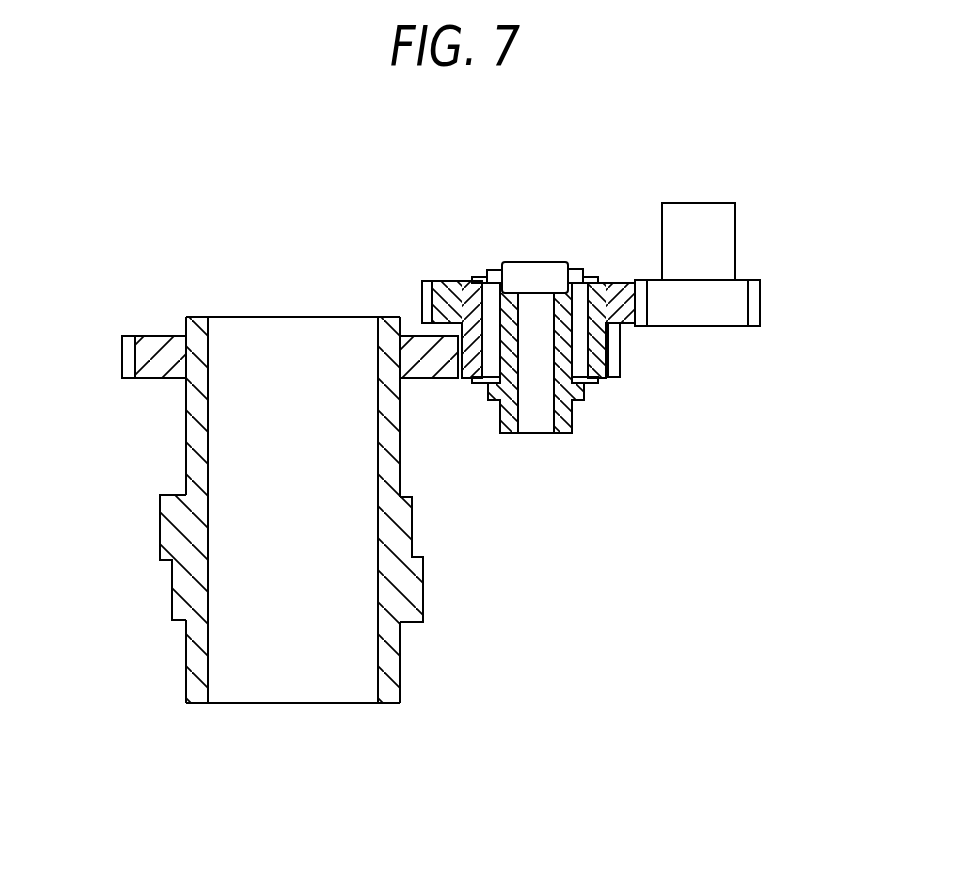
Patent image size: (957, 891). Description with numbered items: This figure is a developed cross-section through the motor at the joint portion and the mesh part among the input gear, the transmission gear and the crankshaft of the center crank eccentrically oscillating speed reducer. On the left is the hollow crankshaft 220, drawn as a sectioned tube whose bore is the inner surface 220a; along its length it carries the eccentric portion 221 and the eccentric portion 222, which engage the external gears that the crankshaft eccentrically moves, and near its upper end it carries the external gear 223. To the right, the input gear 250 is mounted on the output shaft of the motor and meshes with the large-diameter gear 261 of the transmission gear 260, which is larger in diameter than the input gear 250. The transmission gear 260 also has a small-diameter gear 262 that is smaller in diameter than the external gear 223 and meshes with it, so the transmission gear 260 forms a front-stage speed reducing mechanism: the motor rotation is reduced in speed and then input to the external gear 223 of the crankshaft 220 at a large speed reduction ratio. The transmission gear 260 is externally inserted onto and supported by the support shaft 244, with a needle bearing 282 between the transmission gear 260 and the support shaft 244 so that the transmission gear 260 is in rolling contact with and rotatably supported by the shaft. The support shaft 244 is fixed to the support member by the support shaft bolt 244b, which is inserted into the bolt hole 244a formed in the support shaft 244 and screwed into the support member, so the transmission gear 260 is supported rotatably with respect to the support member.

The hollow crankshaft 220 is at (190, 441).
The inner peripheral surface 220a is at (207, 677).
The eccentric portion 221 is at (170, 533).
The eccentric portion 222 is at (415, 587).
The external gear 223 is at (130, 355).
The support shaft 244 is at (562, 407).
The bolt hole 244a is at (518, 413).
The support shaft bolt 244b is at (537, 273).
The input gear 250 is at (753, 290).
The transmission gear 260 is at (473, 277).
The large-diameter gear 261 is at (422, 290).
The small-diameter gear 262 is at (613, 345).
The needle bearing 282 is at (605, 375).